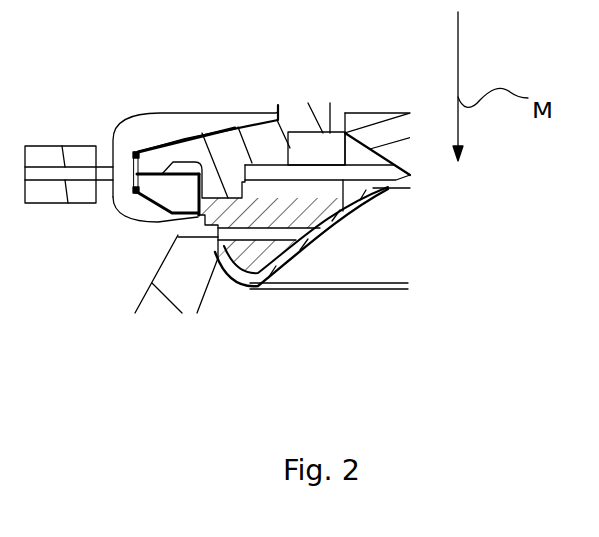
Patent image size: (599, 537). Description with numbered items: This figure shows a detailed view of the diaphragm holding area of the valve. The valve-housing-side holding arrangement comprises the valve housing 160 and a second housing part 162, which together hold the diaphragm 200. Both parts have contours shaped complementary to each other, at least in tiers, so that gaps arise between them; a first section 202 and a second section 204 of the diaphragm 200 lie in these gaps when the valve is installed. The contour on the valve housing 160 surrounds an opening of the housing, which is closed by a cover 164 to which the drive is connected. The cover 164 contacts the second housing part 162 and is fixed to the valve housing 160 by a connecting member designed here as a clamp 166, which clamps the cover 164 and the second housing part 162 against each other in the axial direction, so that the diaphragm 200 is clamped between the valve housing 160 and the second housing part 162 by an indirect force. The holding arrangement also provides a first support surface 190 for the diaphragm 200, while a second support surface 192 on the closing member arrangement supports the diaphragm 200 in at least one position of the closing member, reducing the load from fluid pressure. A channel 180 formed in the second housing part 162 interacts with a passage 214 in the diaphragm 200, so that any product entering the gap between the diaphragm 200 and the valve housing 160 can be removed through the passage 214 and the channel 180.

The valve housing 160 is at (170, 306).
The second housing part 162 is at (262, 262).
The cover 164 is at (193, 145).
The clamp 166 is at (145, 133).
The channel 180 is at (300, 260).
The first support surface 190 is at (305, 268).
The second support surface 192 is at (352, 148).
The diaphragm 200 is at (377, 192).
The first section 202 is at (198, 218).
The second section 204 is at (185, 247).
The passage 214 is at (178, 237).